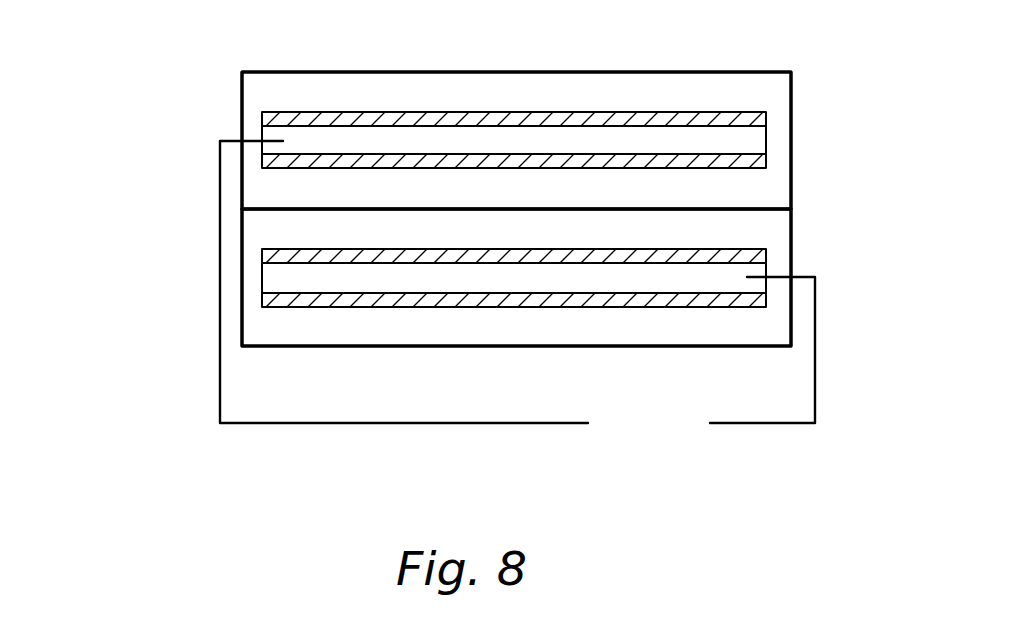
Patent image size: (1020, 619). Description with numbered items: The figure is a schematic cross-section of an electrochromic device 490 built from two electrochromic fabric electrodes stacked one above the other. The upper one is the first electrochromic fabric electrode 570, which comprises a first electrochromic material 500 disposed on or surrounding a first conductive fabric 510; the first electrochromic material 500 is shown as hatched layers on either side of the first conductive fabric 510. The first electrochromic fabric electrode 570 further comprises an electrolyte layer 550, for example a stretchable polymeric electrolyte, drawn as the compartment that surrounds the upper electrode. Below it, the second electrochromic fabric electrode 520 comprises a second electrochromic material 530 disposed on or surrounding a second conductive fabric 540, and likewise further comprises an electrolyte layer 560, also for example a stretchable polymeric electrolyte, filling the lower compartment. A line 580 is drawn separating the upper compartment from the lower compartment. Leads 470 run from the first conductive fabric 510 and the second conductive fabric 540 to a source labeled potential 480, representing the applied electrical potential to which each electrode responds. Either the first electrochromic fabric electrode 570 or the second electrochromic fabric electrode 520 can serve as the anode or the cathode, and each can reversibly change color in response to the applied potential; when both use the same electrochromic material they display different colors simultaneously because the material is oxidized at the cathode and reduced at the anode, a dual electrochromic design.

The electrical leads 470 is at (219, 276).
The electrical potential source 480 is at (633, 438).
The electrochromic device 490 is at (142, 147).
The first electrochromic material 500 is at (609, 112).
The first conductive fabric 510 is at (432, 141).
The second electrochromic fabric electrode 520 is at (577, 279).
The second electrochromic material 530 is at (609, 249).
The second conductive fabric 540 is at (432, 277).
The electrolyte layer 550 is at (267, 92).
The electrolyte layer 560 is at (487, 327).
The first electrochromic fabric electrode 570 is at (577, 139).
The divider wall 580 is at (417, 208).